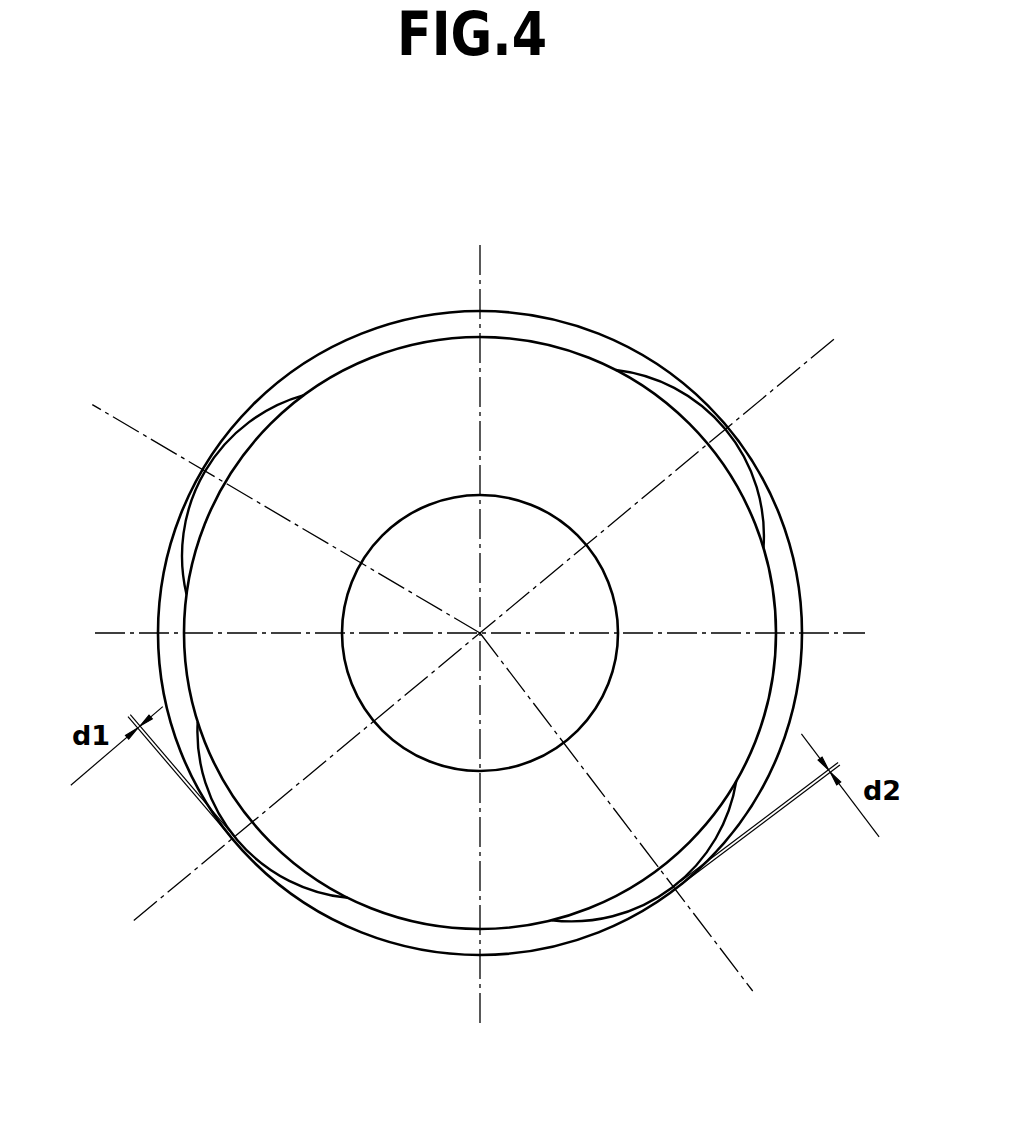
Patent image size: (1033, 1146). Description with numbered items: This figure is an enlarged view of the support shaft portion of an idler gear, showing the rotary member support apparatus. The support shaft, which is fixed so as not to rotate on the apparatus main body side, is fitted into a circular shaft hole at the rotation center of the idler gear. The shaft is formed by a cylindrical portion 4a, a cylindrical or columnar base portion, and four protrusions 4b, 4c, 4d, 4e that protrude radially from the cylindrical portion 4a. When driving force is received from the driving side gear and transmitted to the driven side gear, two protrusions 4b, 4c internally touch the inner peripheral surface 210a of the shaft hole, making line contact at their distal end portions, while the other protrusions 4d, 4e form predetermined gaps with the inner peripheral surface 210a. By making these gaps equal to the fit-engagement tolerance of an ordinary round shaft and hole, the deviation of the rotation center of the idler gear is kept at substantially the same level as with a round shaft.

The inner peripheral surface 210a is at (427, 316).
The cylindrical portion 4a is at (538, 398).
The protrusion 4b is at (262, 412).
The protrusion 4c is at (770, 493).
The protrusion 4d is at (290, 866).
The protrusion 4e is at (627, 897).